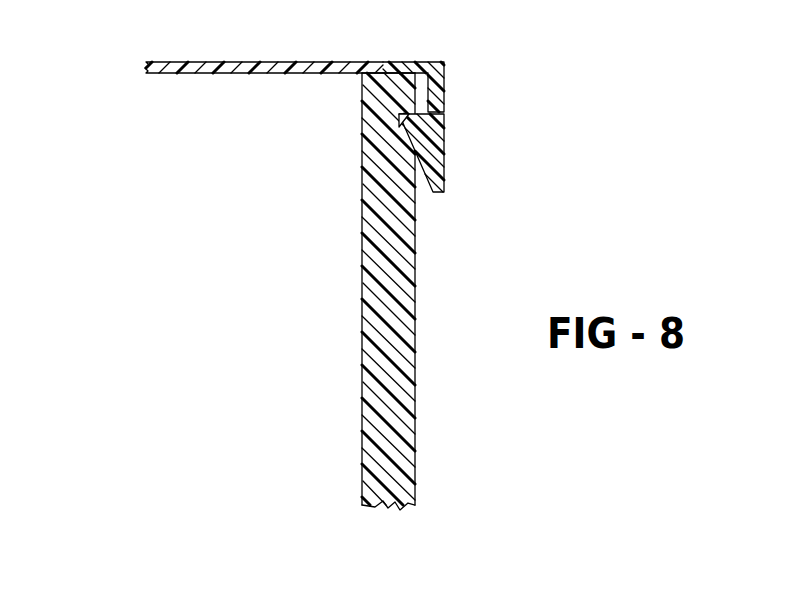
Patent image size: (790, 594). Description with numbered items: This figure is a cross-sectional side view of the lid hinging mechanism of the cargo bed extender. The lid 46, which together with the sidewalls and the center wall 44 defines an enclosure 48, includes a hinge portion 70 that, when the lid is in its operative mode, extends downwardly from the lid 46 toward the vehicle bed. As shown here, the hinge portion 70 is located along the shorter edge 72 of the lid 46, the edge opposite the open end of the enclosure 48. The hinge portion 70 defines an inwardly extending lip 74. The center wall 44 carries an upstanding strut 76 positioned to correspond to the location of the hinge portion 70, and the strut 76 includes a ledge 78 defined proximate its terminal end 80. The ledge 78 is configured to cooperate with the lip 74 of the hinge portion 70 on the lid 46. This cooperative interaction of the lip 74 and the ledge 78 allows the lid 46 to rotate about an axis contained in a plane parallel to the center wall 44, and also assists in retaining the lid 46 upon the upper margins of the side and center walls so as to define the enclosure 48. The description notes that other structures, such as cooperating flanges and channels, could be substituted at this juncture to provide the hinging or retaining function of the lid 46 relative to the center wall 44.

The center wall 44 is at (369, 291).
The lid 46 is at (228, 61).
The enclosure 48 is at (190, 199).
The hinge portion 70 is at (437, 112).
The shorter edge 72 is at (445, 81).
The inwardly extending lip 74 is at (393, 157).
The upstanding strut 76 is at (393, 377).
The ledge 78 is at (405, 128).
The terminal end 80 is at (370, 62).